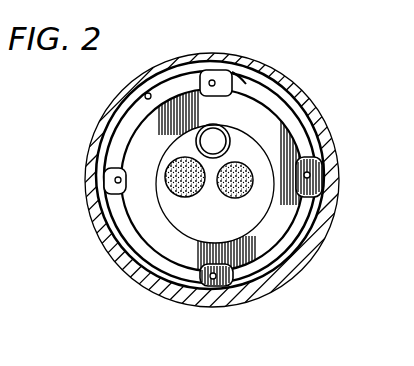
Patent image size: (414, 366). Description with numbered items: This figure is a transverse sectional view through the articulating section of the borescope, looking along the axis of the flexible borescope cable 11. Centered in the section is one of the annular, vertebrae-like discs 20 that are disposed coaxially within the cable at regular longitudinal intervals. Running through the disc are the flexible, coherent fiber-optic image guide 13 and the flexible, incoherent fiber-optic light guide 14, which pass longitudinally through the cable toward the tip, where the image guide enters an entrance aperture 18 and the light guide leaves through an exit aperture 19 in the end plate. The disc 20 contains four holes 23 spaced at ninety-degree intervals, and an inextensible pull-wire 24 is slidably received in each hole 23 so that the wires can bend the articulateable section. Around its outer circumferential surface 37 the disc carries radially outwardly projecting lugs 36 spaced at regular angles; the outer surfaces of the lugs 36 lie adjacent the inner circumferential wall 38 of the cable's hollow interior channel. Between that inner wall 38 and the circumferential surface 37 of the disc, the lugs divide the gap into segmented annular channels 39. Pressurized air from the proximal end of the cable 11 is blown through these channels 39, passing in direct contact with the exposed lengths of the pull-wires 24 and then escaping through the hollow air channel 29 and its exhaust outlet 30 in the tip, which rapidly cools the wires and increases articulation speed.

The borescope cable 11 is at (337, 131).
The fiber-optic image guide 13 is at (167, 188).
The fiber-optic light guide 14 is at (232, 194).
The entrance aperture 18 is at (165, 168).
The exit aperture 19 is at (250, 168).
The annular disc 20 is at (248, 80).
The hole 23 is at (104, 178).
The pull-wire 24 is at (112, 190).
The hollow air channel 29 is at (203, 70).
The exhaust outlet 30 is at (216, 137).
The lug 36 is at (318, 200).
The circumferential surface 37 is at (285, 250).
The inner circumferential wall 38 is at (147, 93).
The segmented annular channel 39 is at (111, 116).